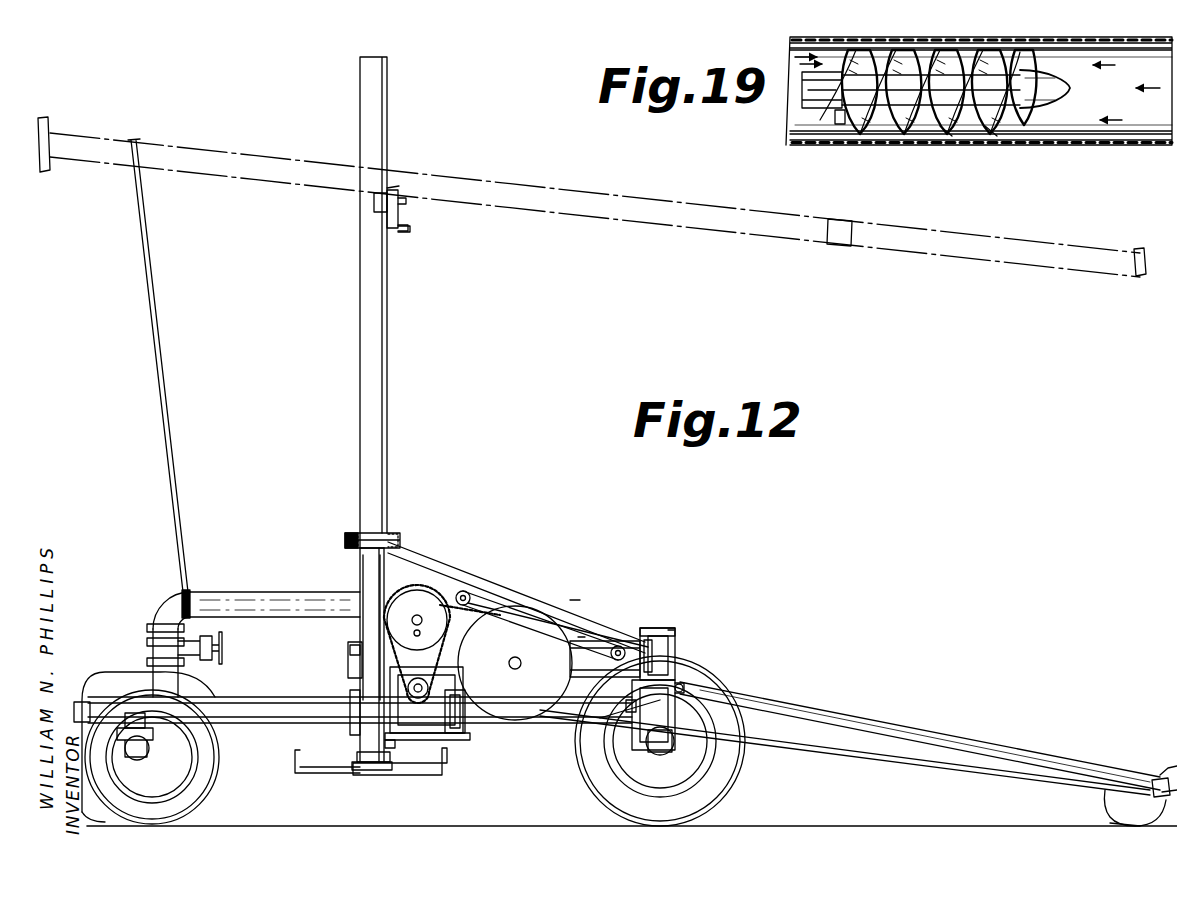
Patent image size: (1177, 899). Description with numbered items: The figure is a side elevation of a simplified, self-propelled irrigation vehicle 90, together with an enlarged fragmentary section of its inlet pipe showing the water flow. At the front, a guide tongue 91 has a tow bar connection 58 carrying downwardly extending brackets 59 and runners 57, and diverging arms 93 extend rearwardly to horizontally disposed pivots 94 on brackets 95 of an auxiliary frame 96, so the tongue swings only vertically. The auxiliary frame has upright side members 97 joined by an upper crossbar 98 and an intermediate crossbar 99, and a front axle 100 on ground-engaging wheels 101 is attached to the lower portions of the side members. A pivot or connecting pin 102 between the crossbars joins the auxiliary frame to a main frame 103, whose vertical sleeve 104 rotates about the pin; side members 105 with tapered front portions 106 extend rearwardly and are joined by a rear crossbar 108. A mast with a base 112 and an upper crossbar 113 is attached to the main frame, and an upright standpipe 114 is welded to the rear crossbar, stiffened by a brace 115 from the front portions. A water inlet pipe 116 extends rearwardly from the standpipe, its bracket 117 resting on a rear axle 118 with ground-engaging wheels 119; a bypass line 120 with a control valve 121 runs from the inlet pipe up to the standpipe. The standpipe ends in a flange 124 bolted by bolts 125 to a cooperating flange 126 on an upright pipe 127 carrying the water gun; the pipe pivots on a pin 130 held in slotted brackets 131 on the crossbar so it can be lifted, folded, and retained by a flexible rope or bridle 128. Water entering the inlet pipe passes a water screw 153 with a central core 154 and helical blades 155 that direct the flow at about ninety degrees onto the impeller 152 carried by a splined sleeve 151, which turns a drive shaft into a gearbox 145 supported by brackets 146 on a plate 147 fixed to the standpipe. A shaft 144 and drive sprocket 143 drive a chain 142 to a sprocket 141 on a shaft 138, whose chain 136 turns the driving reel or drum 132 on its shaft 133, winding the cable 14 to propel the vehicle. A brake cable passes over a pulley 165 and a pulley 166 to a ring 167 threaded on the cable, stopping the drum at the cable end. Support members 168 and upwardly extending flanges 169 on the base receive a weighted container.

In FIG. 12, the cable 14 is at (858, 757).
In FIG. 12, the runners 57 is at (1110, 823).
In FIG. 12, the tow bar connection 58 is at (1168, 772).
In FIG. 12, the downwardly extending brackets 59 is at (1142, 790).
In FIG. 12, the vehicle 90 is at (574, 601).
In FIG. 12, the guide tongue 91 is at (868, 712).
In FIG. 12, the diverging arms 93 is at (965, 718).
In FIG. 12, the horizontally disposed pivots 94 is at (690, 690).
In FIG. 12, the brackets 95 is at (686, 684).
In FIG. 12, the auxiliary frame 96 is at (684, 629).
In FIG. 12, the upright side members 97 is at (630, 706).
In FIG. 12, the upper crossbar 98 is at (653, 633).
In FIG. 12, the intermediate crossbar 99 is at (653, 715).
In FIG. 12, the front axle 100 is at (650, 757).
In FIG. 12, the ground-engaging wheels 101 is at (745, 756).
In FIG. 12, the pivot or connecting pin 102 is at (669, 628).
In FIG. 12, the main frame 103 is at (600, 645).
In FIG. 12, the sleeve 104 is at (680, 656).
In FIG. 12, the side members 105 is at (582, 637).
In FIG. 12, the front portions 106 is at (522, 666).
In FIG. 12, the rear crossbar 108 is at (352, 668).
In FIG. 12, the base 112 is at (372, 782).
In FIG. 12, the crossbar 113 is at (404, 230).
In FIG. 12, the standpipe 114 is at (364, 578).
In FIG. 12, the brace 115 is at (437, 557).
In FIG. 12, the water inlet pipe 116 is at (240, 735).
In FIG. 19, the water inlet pipe 116 is at (1152, 40).
In FIG. 12, the bracket 117 is at (134, 713).
In FIG. 12, the rear axle 118 is at (150, 762).
In FIG. 12, the ground-engaging wheels 119 is at (202, 795).
In FIG. 12, the bypass line 120 is at (262, 603).
In FIG. 12, the control valve 121 is at (203, 660).
In FIG. 12, the flange 124 is at (362, 552).
In FIG. 12, the bolts 125 is at (391, 533).
In FIG. 12, the cooperating flange 126 is at (345, 538).
In FIG. 12, the upright pipe 127 is at (568, 190).
In FIG. 12, the flexible rope or bridle 128 is at (168, 342).
In FIG. 12, the pin 130 is at (400, 196).
In FIG. 12, the slotted brackets 131 is at (396, 190).
In FIG. 12, the driving reel or drum 132 is at (555, 606).
In FIG. 12, the shaft 133 is at (520, 660).
In FIG. 12, the chain 136 is at (472, 599).
In FIG. 12, the shaft 138 is at (388, 607).
In FIG. 12, the sprocket 141 is at (400, 622).
In FIG. 12, the chain 142 is at (378, 638).
In FIG. 12, the drive sprocket 143 is at (430, 688).
In FIG. 12, the shaft 144 is at (424, 728).
In FIG. 12, the gearbox 145 is at (452, 740).
In FIG. 12, the brackets 146 is at (388, 746).
In FIG. 12, the plate 147 is at (372, 700).
In FIG. 19, the splined sleeve 151 is at (792, 110).
In FIG. 19, the impeller 152 is at (840, 125).
In FIG. 19, the water screw 153 is at (1012, 50).
In FIG. 19, the central core 154 is at (1045, 110).
In FIG. 19, the helical blades 155 is at (950, 56).
In FIG. 12, the pulley 165 is at (484, 605).
In FIG. 12, the pulley 166 is at (605, 659).
In FIG. 12, the ring 167 is at (630, 722).
In FIG. 12, the support member 168 is at (400, 780).
In FIG. 12, the upwardly extending flanges 169 is at (300, 762).